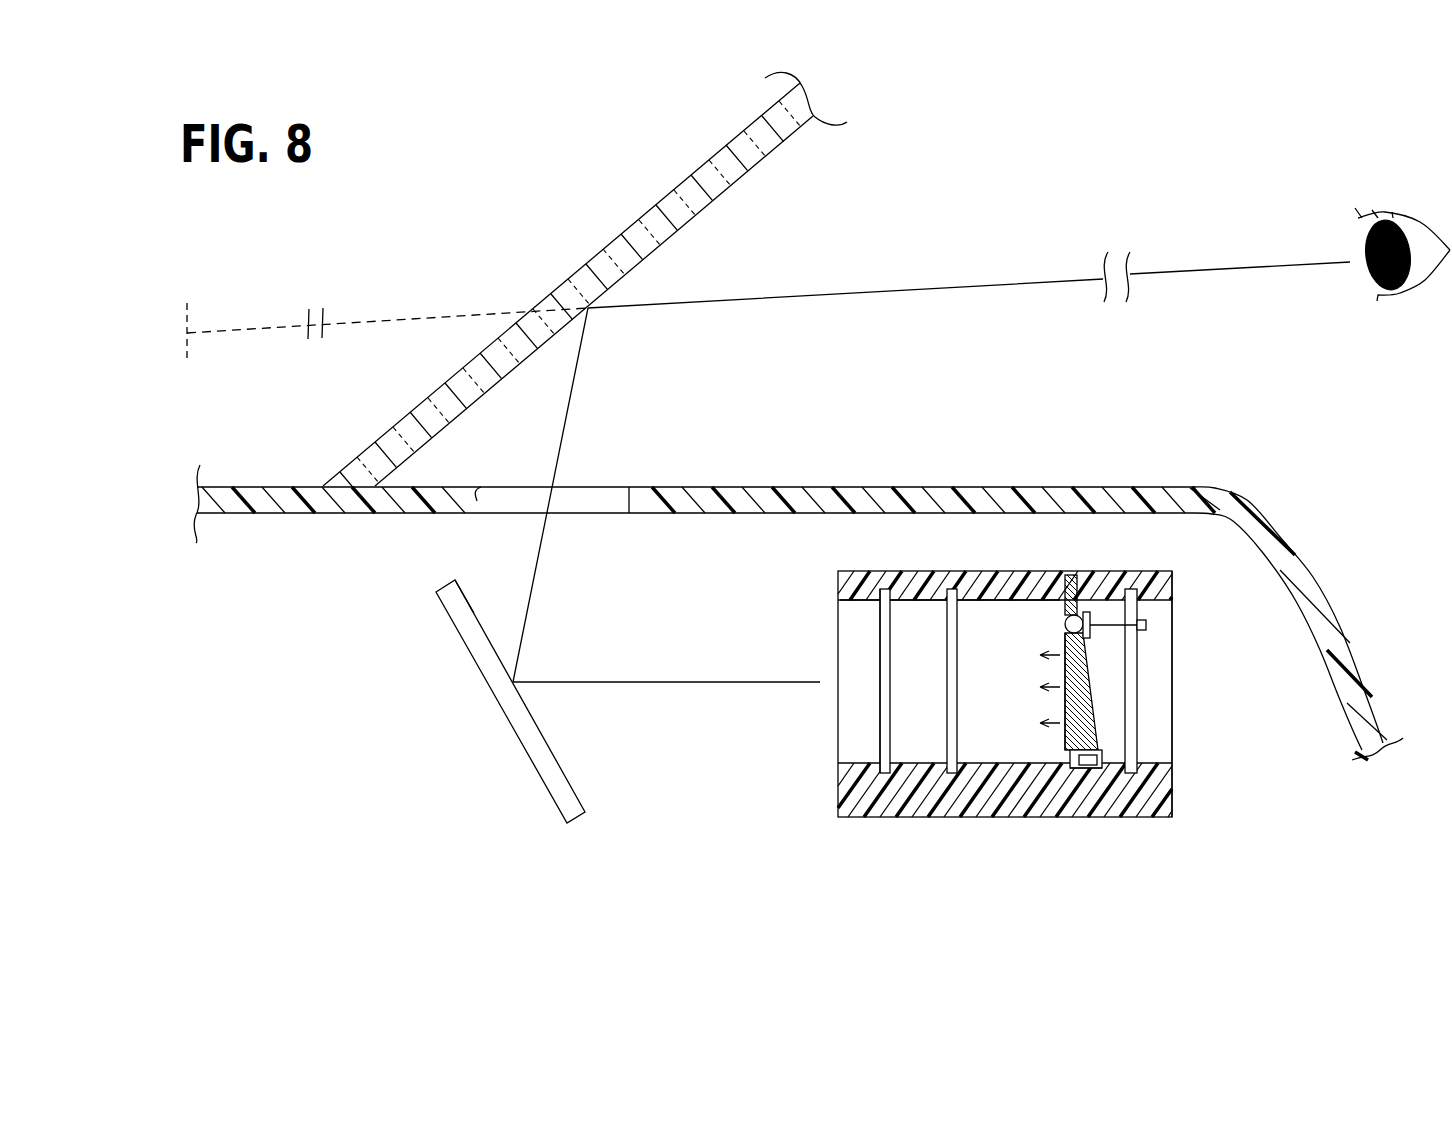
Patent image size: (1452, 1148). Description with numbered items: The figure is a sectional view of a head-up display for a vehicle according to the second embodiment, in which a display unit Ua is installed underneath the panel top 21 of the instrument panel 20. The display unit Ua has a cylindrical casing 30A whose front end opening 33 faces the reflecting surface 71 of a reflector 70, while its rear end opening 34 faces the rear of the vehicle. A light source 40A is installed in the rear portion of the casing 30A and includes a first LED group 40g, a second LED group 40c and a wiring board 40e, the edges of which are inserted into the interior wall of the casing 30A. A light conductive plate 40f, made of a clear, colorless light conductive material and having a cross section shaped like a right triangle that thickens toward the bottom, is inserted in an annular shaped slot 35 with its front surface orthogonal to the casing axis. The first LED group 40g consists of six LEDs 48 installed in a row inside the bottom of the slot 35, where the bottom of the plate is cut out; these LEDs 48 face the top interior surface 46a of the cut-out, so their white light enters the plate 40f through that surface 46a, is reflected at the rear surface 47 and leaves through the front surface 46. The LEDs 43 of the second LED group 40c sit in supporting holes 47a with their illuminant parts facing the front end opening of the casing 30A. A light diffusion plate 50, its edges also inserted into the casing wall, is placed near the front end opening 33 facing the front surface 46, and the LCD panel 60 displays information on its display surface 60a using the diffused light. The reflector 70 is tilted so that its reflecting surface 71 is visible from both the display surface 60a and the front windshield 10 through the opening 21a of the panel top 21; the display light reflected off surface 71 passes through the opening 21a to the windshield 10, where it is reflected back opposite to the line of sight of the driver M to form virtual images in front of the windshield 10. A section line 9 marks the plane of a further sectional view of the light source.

The front windshield 10 is at (750, 183).
The driver M is at (1422, 217).
The instrument panel 20 is at (1320, 580).
The panel top 21 is at (704, 494).
The opening 21a is at (618, 513).
The reflector 70 is at (562, 686).
The reflecting surface 71 is at (474, 613).
The section line 9 is at (1053, 560).
The display unit Ua is at (1015, 695).
The cylindrical casing 30A is at (1000, 557).
The front end opening 33 is at (863, 601).
The rear end opening 34 is at (1165, 603).
The annular shaped slot 35 is at (1063, 587).
The top interior surface 46a is at (1027, 807).
The LCD panel 60 is at (829, 681).
The display surface 60a is at (880, 645).
The light diffusion plate 50 is at (934, 743).
The light source 40A is at (1115, 696).
The wiring board 40e is at (1149, 657).
The second LED group 40c is at (1102, 613).
The light conductive plate 40f is at (1051, 707).
The first LED group 40g is at (1098, 768).
The LEDs 43 is at (1063, 629).
The front surface 46 is at (1063, 667).
The rear surface 47 is at (1093, 713).
The supporting holes 47a is at (1065, 621).
The LEDs 48 is at (1090, 773).